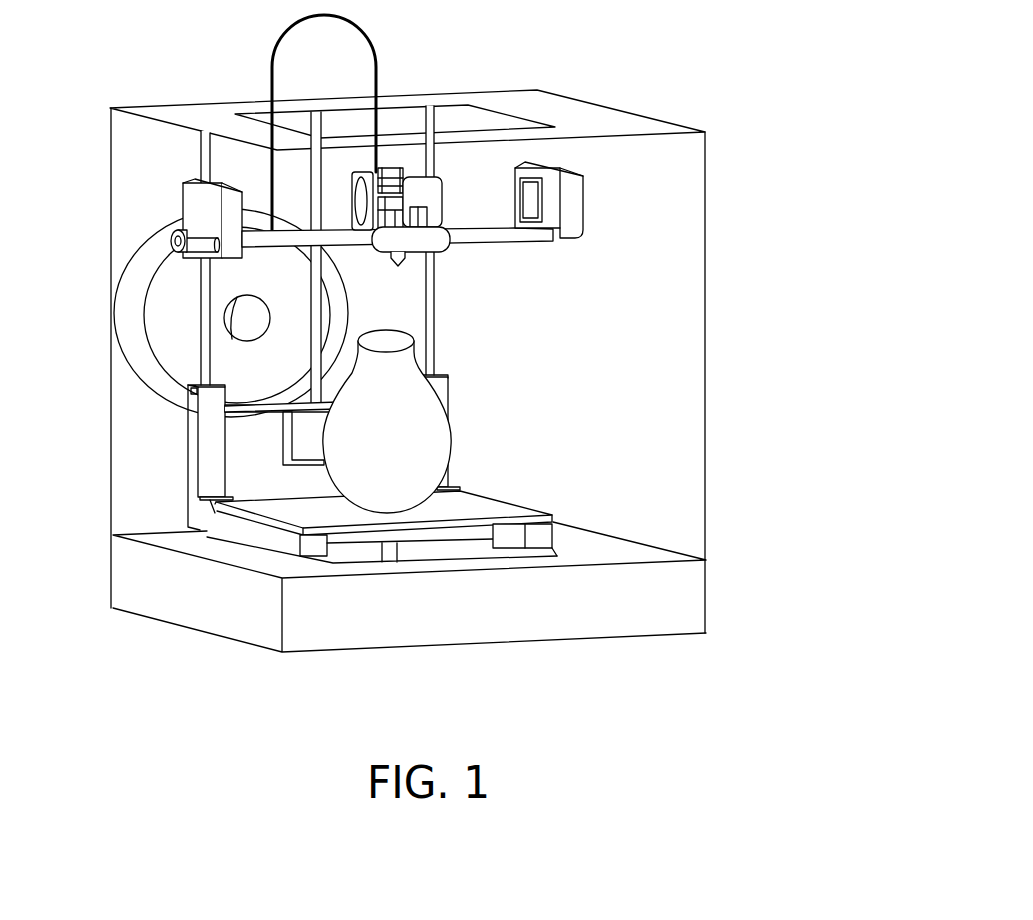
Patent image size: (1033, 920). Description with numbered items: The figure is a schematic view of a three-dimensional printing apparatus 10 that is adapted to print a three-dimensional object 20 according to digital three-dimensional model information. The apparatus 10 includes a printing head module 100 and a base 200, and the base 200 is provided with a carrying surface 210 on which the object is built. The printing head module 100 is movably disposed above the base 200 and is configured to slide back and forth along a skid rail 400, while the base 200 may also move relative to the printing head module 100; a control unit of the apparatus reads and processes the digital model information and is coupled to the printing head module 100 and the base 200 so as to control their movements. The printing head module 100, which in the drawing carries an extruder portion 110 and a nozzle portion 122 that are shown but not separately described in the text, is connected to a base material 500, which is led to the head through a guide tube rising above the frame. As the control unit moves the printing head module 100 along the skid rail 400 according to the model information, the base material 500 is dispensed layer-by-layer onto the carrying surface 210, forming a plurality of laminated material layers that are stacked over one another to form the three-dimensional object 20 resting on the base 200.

The three-dimensional printing apparatus 10 is at (782, 707).
The 3-D object 20 is at (353, 447).
The printing head module 100 is at (597, 193).
The extruder / feeding module 110 is at (427, 190).
The nozzle 122 is at (362, 247).
The base 200 is at (498, 480).
The carrying surface 210 is at (481, 505).
The skid rail 400 is at (497, 237).
The base material 500 is at (378, 60).